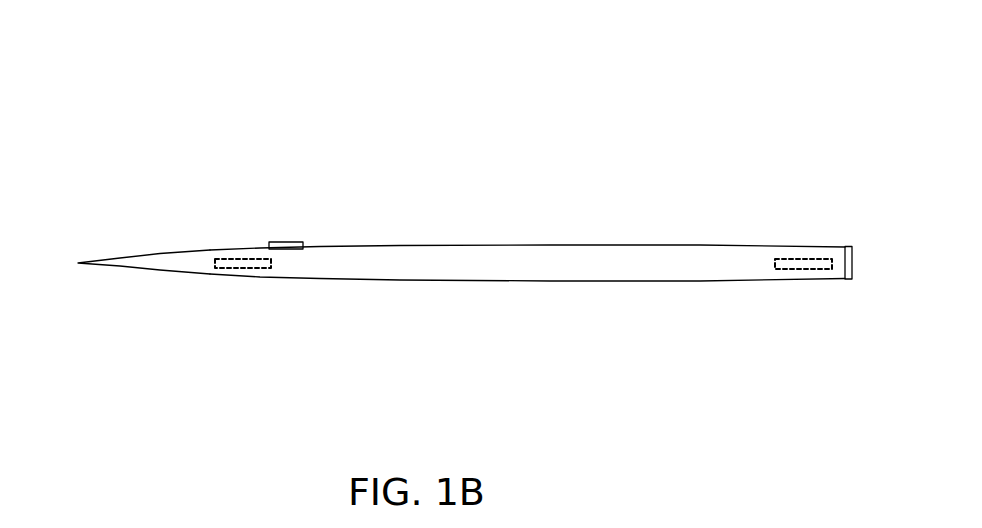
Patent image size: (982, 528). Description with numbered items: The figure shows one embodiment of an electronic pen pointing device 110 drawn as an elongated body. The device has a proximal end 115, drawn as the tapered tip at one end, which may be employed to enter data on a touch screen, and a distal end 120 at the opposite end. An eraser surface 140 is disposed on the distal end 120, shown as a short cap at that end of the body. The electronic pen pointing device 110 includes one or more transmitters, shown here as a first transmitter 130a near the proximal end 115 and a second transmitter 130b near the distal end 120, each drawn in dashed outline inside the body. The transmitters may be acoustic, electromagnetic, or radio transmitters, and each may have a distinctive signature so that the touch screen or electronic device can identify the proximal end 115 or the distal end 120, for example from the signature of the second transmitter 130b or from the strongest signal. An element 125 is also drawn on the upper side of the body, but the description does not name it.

The electronic pen pointing device 110 is at (150, 44).
The proximal end 115 is at (113, 256).
The distal end 120 is at (828, 244).
The button 125 is at (293, 242).
The transmitter 130a is at (257, 266).
The second transmitter 130b is at (795, 272).
The eraser surface 140 is at (852, 247).